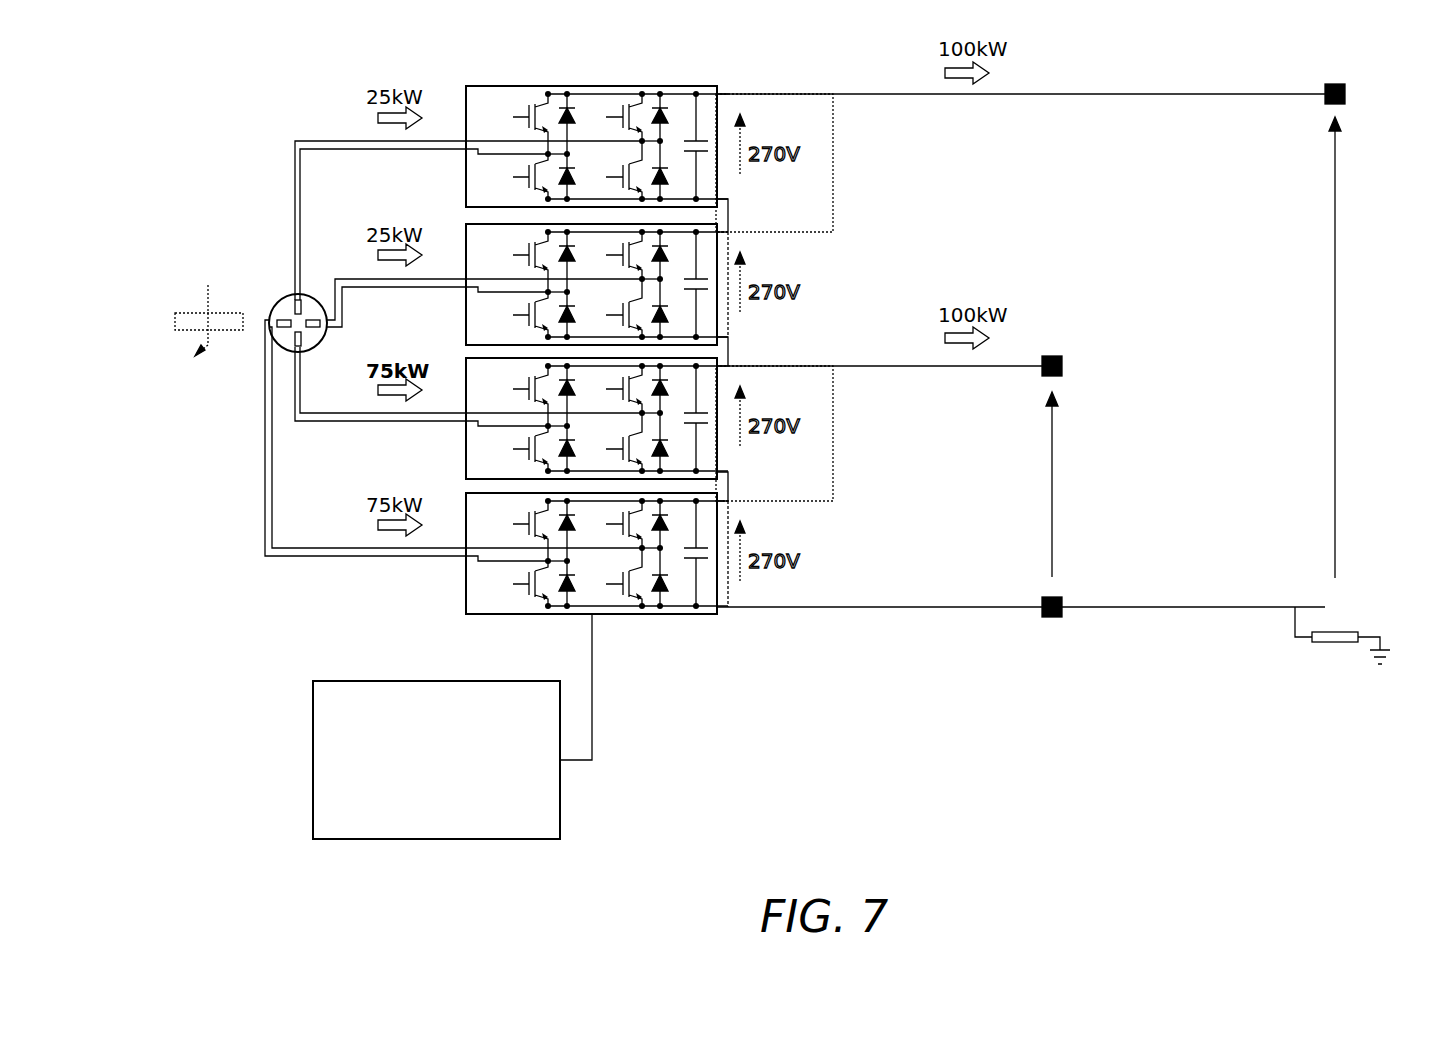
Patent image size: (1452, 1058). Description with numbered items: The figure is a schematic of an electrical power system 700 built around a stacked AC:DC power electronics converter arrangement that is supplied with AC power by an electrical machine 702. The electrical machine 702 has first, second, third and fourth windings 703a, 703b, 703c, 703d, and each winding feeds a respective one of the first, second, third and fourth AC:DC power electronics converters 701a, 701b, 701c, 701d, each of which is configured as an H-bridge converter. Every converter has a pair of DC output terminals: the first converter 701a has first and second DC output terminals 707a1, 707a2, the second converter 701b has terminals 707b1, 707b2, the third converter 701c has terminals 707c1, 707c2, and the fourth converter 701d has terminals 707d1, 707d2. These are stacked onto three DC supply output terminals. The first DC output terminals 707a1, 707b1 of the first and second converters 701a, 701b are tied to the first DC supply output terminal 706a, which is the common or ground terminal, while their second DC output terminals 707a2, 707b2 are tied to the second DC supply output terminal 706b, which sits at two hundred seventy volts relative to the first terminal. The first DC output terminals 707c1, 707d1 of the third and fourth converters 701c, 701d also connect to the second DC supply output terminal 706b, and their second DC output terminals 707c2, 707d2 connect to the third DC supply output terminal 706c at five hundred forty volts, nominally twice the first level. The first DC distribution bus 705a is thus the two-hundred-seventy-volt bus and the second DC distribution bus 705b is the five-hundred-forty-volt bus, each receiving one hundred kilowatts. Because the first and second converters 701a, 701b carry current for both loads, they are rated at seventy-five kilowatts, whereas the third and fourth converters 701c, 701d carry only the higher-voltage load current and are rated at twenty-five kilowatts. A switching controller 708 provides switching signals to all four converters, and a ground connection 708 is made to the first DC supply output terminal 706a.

The electrical power system 700 is at (273, 52).
The electrical machine 702 is at (284, 304).
The first winding 703a is at (285, 333).
The second winding 703b is at (312, 340).
The third winding 703c is at (318, 318).
The fourth winding 703d is at (295, 300).
The first AC:DC power electronics converter 701a is at (466, 604).
The second AC:DC power electronics converter 701b is at (466, 445).
The third AC:DC power electronics converter 701c is at (466, 312).
The fourth AC:DC power electronics converter 701d is at (466, 176).
The first DC output terminal of the first converter 707a1 is at (728, 610).
The second DC output terminal of the first converter 707a2 is at (772, 501).
The first DC output terminal of the second converter 707b1 is at (730, 472).
The second DC output terminal of the second converter 707b2 is at (740, 366).
The first DC output terminal of the third converter 707c1 is at (732, 336).
The second DC output terminal of the third converter 707c2 is at (780, 232).
The first DC output terminal of the fourth converter 707d1 is at (730, 200).
The second DC output terminal of the fourth converter 707d2 is at (720, 92).
The first DC supply output terminal 706a is at (1052, 618).
The second DC supply output terminal 706b is at (1052, 355).
The third DC supply output terminal 706c is at (1346, 95).
The first DC distribution bus 705a is at (1048, 484).
The second DC distribution bus 705b is at (1368, 347).
The switching controller / ground connection 708 is at (1350, 632).